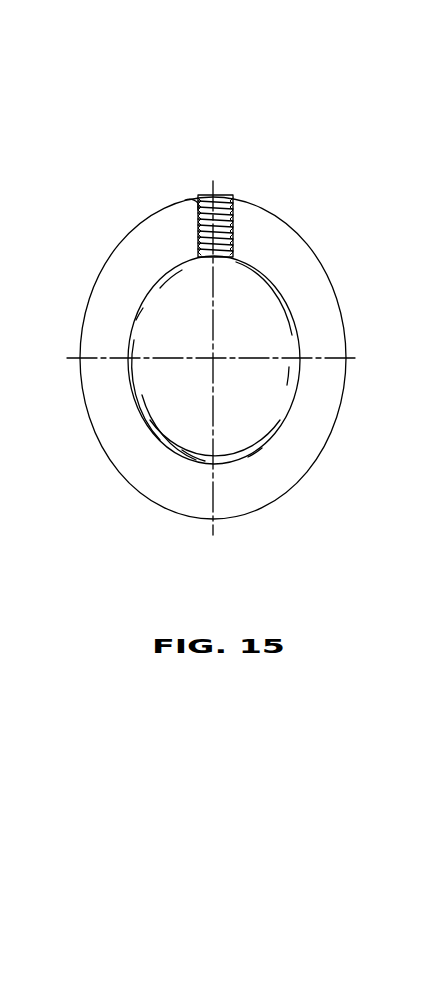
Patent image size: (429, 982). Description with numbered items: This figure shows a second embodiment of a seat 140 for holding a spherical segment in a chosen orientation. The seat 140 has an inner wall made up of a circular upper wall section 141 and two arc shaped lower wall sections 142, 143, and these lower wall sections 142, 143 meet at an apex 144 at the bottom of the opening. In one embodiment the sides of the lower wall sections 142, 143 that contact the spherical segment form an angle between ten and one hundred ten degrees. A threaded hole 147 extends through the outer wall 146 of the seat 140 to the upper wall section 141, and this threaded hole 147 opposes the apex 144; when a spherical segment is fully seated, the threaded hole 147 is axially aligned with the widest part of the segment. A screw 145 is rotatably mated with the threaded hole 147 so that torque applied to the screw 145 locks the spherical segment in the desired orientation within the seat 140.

The seat 140 is at (177, 90).
The circular upper wall section 141 is at (243, 257).
The arc shaped lower wall section 142 is at (290, 390).
The arc shaped lower wall section 143 is at (168, 437).
The apex 144 is at (214, 463).
The screw 145 is at (227, 199).
The outer wall 146 is at (313, 252).
The threaded hole 147 is at (193, 203).